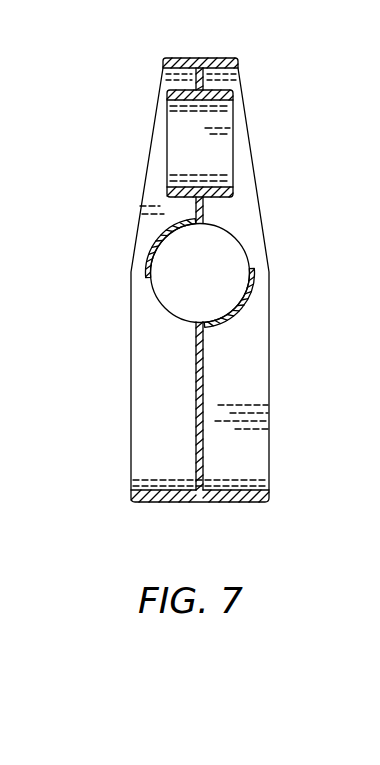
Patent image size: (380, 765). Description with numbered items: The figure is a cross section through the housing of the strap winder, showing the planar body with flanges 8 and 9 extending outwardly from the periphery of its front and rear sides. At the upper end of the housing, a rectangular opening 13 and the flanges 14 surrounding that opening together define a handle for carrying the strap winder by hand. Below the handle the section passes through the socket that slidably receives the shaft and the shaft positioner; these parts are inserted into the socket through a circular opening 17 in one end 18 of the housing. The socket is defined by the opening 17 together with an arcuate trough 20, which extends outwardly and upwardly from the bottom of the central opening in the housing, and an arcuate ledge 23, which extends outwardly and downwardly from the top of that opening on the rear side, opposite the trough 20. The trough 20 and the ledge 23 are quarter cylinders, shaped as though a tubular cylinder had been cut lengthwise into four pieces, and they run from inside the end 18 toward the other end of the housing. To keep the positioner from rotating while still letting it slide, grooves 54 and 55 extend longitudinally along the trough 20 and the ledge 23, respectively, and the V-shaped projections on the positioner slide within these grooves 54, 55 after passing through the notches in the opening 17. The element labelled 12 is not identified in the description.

The flange 8 is at (268, 500).
The flange 9 is at (132, 500).
The neck connecting stem 12 is at (173, 83).
The rectangular opening 13 is at (175, 140).
The flanges 14 is at (238, 84).
The circular opening 17 is at (236, 238).
The end of housing 18 is at (157, 367).
The arcuate trough 20 is at (256, 300).
The arcuate ledge 23 is at (150, 255).
The groove 54 is at (230, 305).
The groove 55 is at (167, 240).